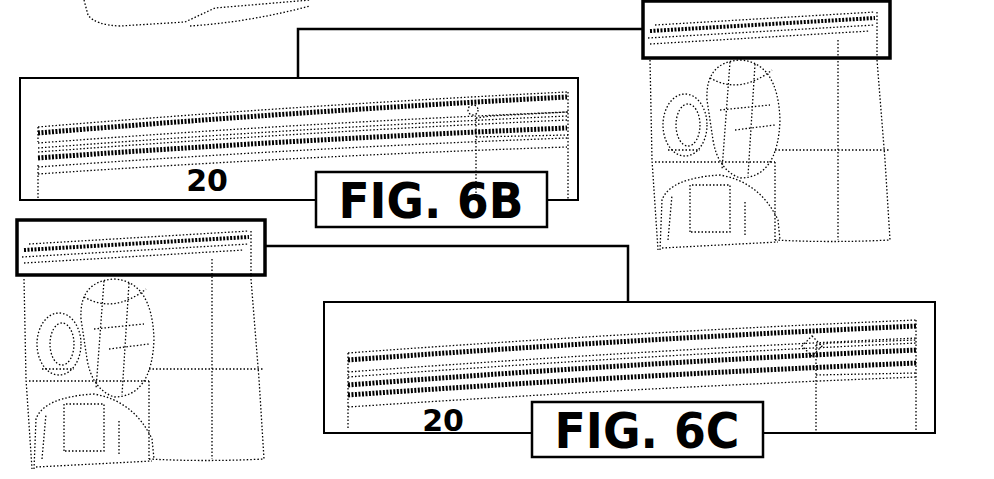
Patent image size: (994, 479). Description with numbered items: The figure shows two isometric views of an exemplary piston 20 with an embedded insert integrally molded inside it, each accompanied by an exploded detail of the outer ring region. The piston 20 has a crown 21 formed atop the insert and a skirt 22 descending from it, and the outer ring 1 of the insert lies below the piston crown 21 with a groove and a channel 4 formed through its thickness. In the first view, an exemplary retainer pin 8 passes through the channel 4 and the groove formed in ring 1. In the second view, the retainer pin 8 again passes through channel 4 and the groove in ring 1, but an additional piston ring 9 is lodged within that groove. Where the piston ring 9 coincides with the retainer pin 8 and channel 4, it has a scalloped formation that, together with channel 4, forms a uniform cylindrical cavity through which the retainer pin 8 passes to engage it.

In FIG. 6B, the outer ring 1 is at (156, 130).
In FIG. 6C, the outer ring 1 is at (476, 355).
In FIG. 6B, the crown 21 is at (193, 100).
In FIG. 6C, the crown 21 is at (513, 327).
In FIG. 6B, the channel 4 is at (474, 96).
In FIG. 6C, the channel 4 is at (812, 328).
In FIG. 6B, the retainer pin 8 is at (484, 120).
In FIG. 6C, the retainer pin 8 is at (827, 344).
In FIG. 6C, the piston ring 9 is at (722, 353).
In FIG. 6B, the piston 20 is at (769, 131).
In FIG. 6C, the piston 20 is at (143, 350).
In FIG. 6B, the skirt 22 is at (822, 201).
In FIG. 6C, the skirt 22 is at (186, 420).